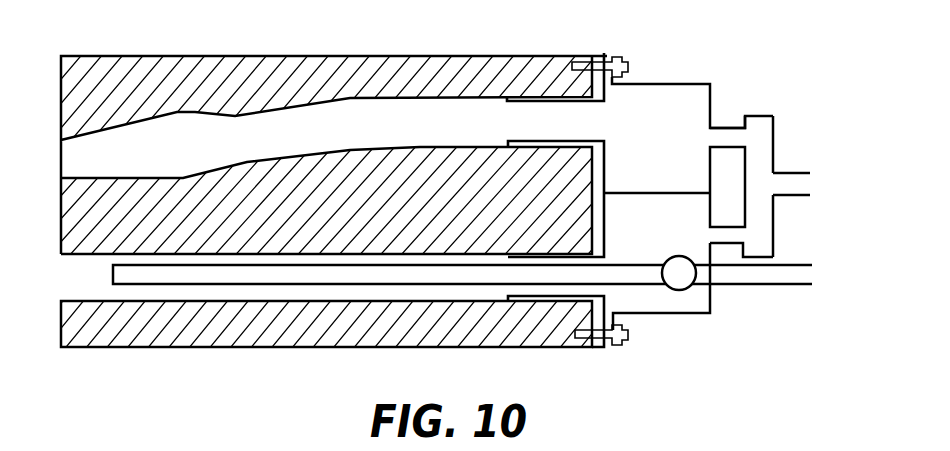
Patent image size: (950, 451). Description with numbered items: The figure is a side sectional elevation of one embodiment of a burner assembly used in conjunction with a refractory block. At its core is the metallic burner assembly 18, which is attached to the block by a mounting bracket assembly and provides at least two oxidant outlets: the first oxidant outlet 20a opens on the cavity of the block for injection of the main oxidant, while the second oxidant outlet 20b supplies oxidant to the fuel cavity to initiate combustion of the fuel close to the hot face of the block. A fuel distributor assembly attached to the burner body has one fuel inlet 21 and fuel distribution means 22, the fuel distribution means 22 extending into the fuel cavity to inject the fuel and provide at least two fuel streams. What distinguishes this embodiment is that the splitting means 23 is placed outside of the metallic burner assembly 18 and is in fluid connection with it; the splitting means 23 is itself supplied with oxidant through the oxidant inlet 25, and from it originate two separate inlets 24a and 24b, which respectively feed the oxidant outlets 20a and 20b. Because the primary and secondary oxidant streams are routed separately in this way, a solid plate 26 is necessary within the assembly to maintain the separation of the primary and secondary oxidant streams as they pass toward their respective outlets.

The metallic burner assembly 18 is at (665, 84).
The first oxidant outlet 20a is at (533, 99).
The second oxidant outlet 20b is at (520, 298).
The fuel inlet 21 is at (793, 285).
The fuel distribution means 22 is at (681, 291).
The splitting means 23 is at (775, 132).
The first separate oxidant inlet 24a is at (722, 127).
The second separate oxidant inlet 24b is at (718, 243).
The oxidant inlet 25 is at (805, 183).
The solid plate 26 is at (626, 195).